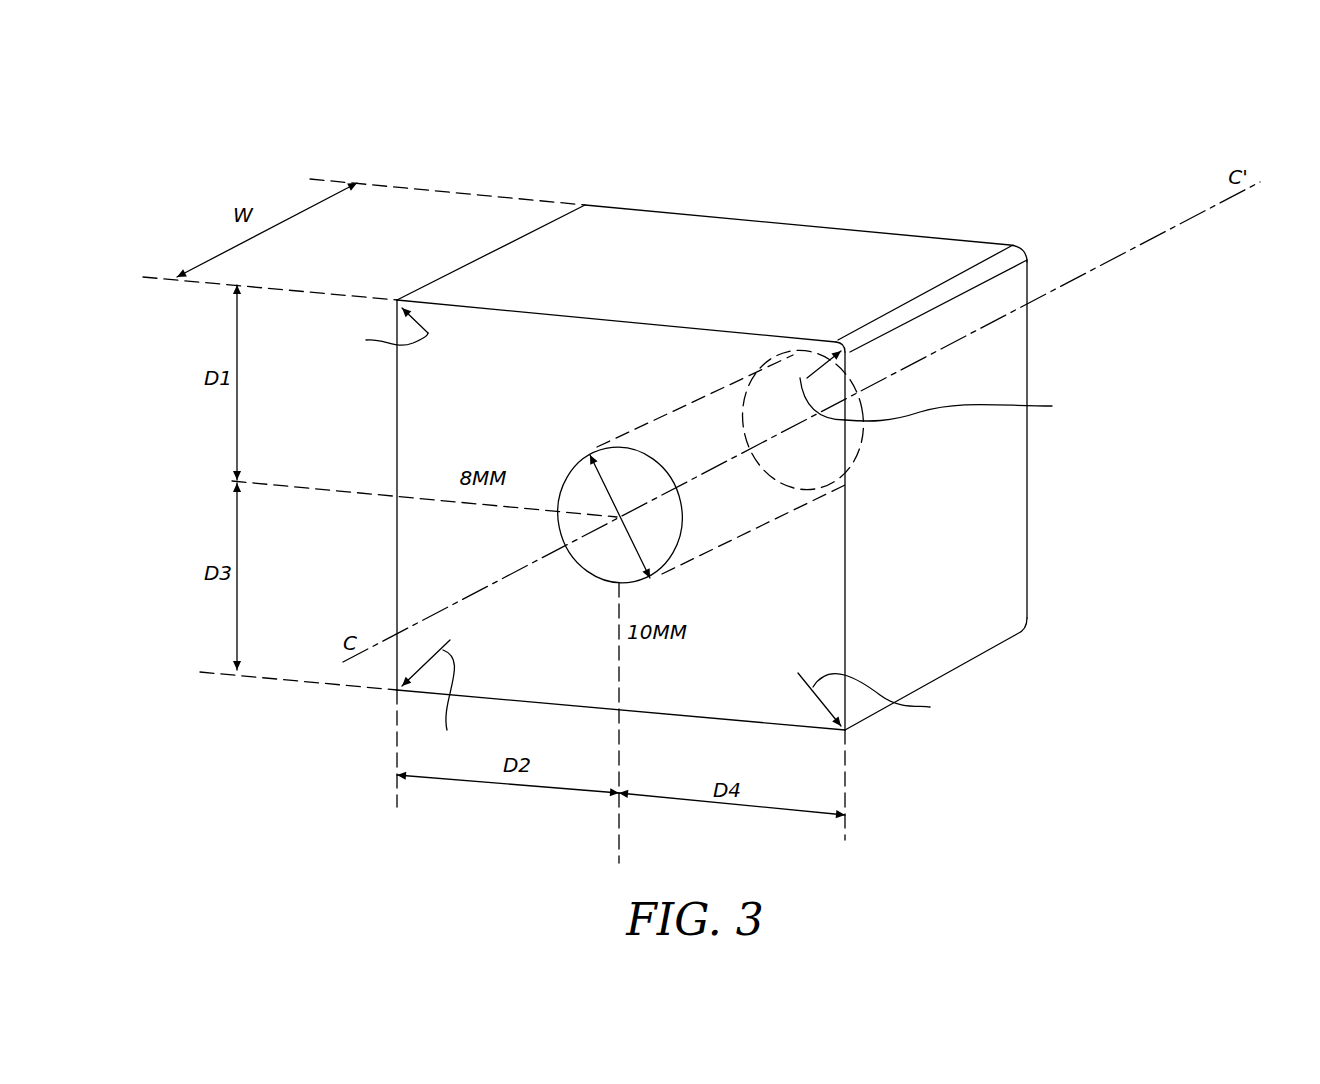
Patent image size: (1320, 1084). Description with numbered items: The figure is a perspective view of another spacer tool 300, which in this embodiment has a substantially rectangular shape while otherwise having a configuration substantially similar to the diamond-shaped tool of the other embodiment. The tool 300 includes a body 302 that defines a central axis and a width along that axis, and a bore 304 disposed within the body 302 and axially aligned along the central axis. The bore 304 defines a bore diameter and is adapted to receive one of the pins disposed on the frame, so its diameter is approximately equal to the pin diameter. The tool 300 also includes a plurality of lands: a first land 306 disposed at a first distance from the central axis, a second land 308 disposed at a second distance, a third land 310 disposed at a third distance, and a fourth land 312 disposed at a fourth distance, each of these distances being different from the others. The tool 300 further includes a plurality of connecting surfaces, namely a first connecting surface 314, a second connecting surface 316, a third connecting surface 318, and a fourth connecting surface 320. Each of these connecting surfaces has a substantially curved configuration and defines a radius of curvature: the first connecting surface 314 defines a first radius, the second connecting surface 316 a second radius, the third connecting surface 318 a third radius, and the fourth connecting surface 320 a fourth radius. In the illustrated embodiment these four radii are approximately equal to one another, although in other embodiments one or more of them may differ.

The spacer tool 300 is at (1034, 117).
The body 302 is at (980, 452).
The bore 304 is at (686, 514).
The first land 306 is at (678, 242).
The second land 308 is at (396, 538).
The third land 310 is at (777, 728).
The fourth land 312 is at (1007, 507).
The first connecting surface 314 is at (397, 300).
The second connecting surface 316 is at (396, 690).
The third connecting surface 318 is at (847, 733).
The fourth connecting surface 320 is at (848, 340).